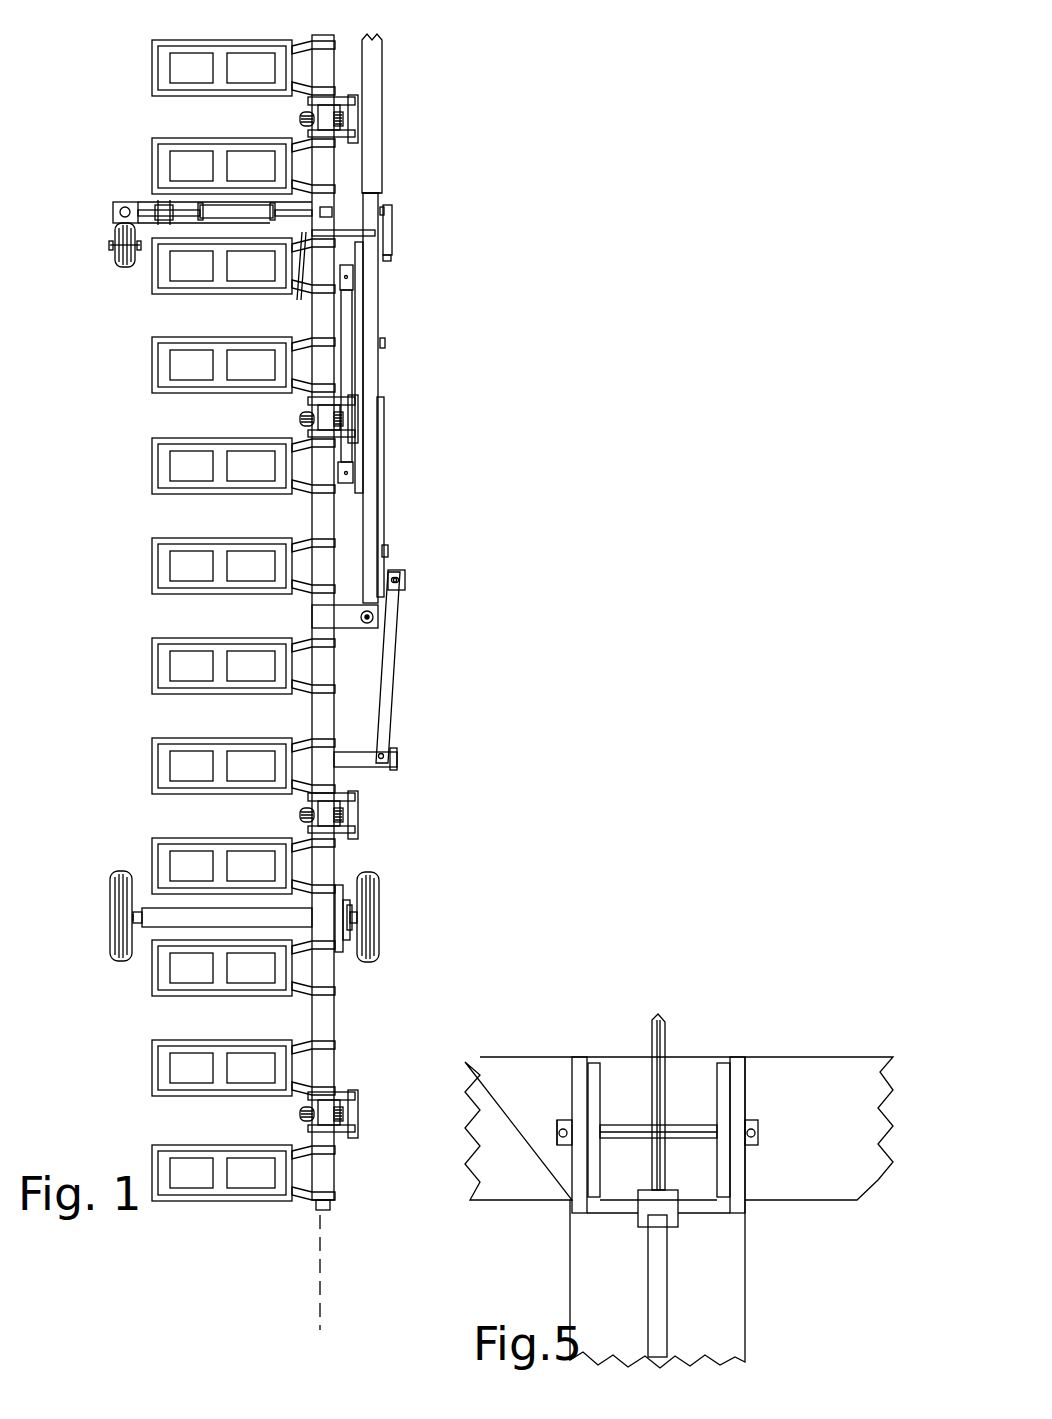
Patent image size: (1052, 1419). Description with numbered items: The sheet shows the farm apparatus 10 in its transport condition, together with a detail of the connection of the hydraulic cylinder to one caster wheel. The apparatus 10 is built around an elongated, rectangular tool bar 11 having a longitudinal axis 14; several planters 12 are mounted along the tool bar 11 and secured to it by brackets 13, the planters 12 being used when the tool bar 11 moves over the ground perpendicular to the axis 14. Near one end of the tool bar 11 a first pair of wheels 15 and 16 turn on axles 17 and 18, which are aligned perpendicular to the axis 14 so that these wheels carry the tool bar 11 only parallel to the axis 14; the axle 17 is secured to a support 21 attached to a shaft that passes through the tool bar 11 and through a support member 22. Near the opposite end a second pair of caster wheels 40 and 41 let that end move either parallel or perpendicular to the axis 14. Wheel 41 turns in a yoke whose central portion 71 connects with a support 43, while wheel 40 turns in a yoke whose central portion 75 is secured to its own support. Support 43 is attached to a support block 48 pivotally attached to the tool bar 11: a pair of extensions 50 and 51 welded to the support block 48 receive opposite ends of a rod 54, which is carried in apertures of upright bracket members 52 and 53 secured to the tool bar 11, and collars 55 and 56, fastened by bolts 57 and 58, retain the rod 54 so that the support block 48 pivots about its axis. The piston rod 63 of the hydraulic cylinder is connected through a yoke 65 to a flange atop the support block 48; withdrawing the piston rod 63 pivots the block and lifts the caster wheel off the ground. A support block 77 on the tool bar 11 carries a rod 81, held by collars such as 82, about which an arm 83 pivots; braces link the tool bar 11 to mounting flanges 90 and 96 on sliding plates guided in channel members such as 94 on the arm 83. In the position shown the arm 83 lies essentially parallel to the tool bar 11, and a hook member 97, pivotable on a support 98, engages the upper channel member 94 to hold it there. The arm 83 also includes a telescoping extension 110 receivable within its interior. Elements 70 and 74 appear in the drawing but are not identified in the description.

In FIG. 1, the farm apparatus 10 is at (620, 443).
In FIG. 1, the tool bar 11 is at (334, 1008).
In FIG. 5, the tool bar 11 is at (507, 1205).
In FIG. 1, the planters 12 is at (150, 470).
In FIG. 1, the brackets 13 is at (334, 1043).
In FIG. 1, the longitudinal axis 14 is at (318, 1270).
In FIG. 1, the wheel 15 is at (108, 935).
In FIG. 1, the wheel 16 is at (379, 893).
In FIG. 1, the axle 17 is at (134, 962).
In FIG. 1, the axle 18 is at (357, 877).
In FIG. 1, the support 21 is at (140, 907).
In FIG. 1, the support member 22 is at (150, 905).
In FIG. 1, the caster wheel 40 is at (124, 268).
In FIG. 1, the caster wheel 41 is at (392, 258).
In FIG. 1, the support 43 is at (383, 193).
In FIG. 5, the support block 48 is at (745, 1283).
In FIG. 5, the extension 50 is at (580, 1057).
In FIG. 5, the extension 51 is at (738, 1060).
In FIG. 5, the upright bracket member 52 is at (593, 1063).
In FIG. 5, the upright bracket member 53 is at (723, 1063).
In FIG. 5, the rod 54 is at (692, 1125).
In FIG. 5, the collar 55 is at (571, 1215).
In FIG. 5, the collar 56 is at (758, 1125).
In FIG. 5, the bolt 57 is at (563, 1147).
In FIG. 5, the bolt 58 is at (758, 1140).
In FIG. 5, the piston rod 63 is at (657, 1015).
In FIG. 5, the yoke 65 is at (678, 1215).
In FIG. 1, the stop 70 is at (385, 210).
In FIG. 1, the central portion 71 is at (393, 222).
In FIG. 1, the hydraulic cylinder 74 is at (125, 204).
In FIG. 1, the central portion 75 is at (115, 210).
In FIG. 1, the support block 77 is at (355, 630).
In FIG. 1, the rod 81 is at (374, 617).
In FIG. 1, the collar 82 is at (374, 620).
In FIG. 1, the arm 83 is at (395, 357).
In FIG. 1, the mounting flange 90 is at (406, 573).
In FIG. 1, the channel member 94 is at (365, 321).
In FIG. 1, the mounting flange 96 is at (355, 277).
In FIG. 1, the hook member 97 is at (378, 235).
In FIG. 1, the support 98 is at (296, 281).
In FIG. 1, the telescoping extension 110 is at (383, 110).